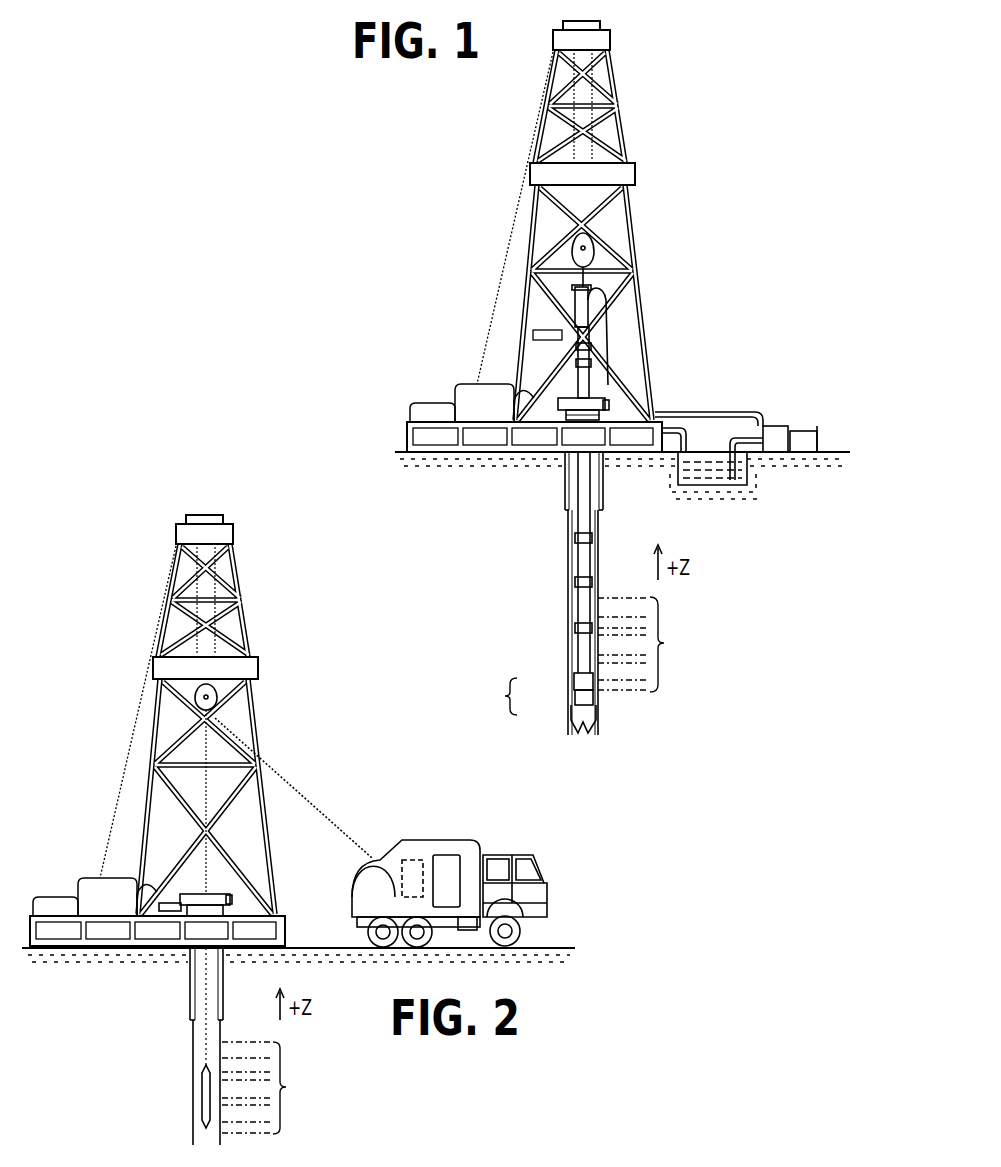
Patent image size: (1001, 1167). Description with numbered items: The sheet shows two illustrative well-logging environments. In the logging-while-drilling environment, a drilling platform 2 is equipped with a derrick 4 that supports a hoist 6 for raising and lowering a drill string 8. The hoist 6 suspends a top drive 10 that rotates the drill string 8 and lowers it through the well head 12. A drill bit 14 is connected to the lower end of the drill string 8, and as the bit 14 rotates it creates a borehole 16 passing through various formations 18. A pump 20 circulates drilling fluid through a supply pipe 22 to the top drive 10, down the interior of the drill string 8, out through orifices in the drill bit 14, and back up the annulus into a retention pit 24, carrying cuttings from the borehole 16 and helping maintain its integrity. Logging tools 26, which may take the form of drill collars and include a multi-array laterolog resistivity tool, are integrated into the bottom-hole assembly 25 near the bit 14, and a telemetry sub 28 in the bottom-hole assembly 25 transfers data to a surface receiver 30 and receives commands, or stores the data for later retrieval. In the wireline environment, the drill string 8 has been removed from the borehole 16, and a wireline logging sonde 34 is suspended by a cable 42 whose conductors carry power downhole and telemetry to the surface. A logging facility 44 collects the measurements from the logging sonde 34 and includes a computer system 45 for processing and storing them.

In FIG. 1, the drilling platform 2 is at (407, 430).
In FIG. 2, the drilling platform 2 is at (172, 912).
In FIG. 1, the derrick 4 is at (616, 121).
In FIG. 2, the derrick 4 is at (199, 714).
In FIG. 1, the hoist 6 is at (595, 248).
In FIG. 2, the hoist 6 is at (241, 705).
In FIG. 1, the drill string 8 is at (588, 572).
In FIG. 1, the top drive 10 is at (590, 306).
In FIG. 1, the well head 12 is at (600, 408).
In FIG. 2, the well head 12 is at (235, 874).
In FIG. 1, the drill bit 14 is at (592, 730).
In FIG. 1, the borehole 16 is at (598, 576).
In FIG. 1, the formations 18 is at (645, 644).
In FIG. 2, the formations 18 is at (268, 1088).
In FIG. 1, the pump 20 is at (772, 428).
In FIG. 1, the supply pipe 22 is at (720, 412).
In FIG. 1, the retention pit 24 is at (697, 470).
In FIG. 1, the bottom-hole assembly 25 is at (496, 696).
In FIG. 1, the logging tools 26 is at (574, 702).
In FIG. 1, the telemetry sub 28 is at (578, 686).
In FIG. 1, the surface receiver 30 is at (585, 366).
In FIG. 2, the wireline logging sonde 34 is at (201, 1090).
In FIG. 2, the cable 42 is at (264, 765).
In FIG. 2, the logging facility 44 is at (466, 842).
In FIG. 2, the computer system 45 is at (405, 858).